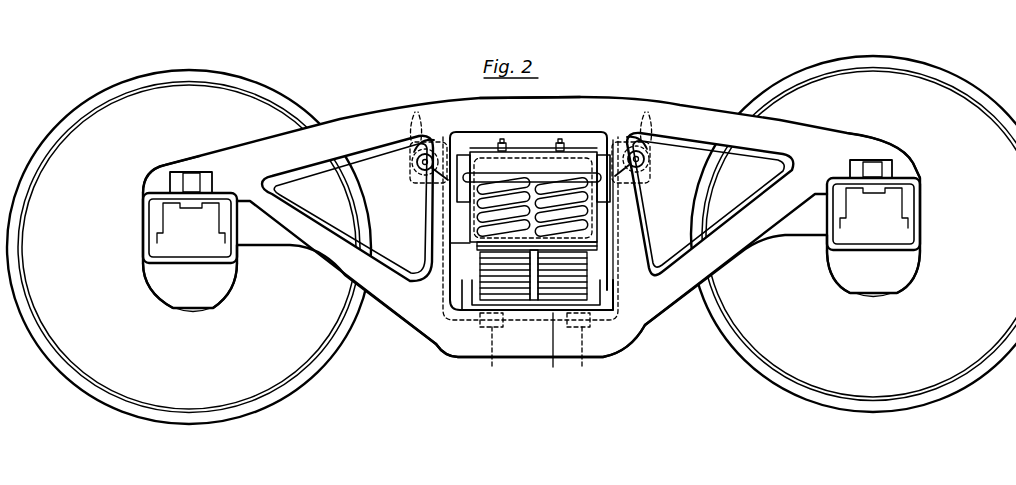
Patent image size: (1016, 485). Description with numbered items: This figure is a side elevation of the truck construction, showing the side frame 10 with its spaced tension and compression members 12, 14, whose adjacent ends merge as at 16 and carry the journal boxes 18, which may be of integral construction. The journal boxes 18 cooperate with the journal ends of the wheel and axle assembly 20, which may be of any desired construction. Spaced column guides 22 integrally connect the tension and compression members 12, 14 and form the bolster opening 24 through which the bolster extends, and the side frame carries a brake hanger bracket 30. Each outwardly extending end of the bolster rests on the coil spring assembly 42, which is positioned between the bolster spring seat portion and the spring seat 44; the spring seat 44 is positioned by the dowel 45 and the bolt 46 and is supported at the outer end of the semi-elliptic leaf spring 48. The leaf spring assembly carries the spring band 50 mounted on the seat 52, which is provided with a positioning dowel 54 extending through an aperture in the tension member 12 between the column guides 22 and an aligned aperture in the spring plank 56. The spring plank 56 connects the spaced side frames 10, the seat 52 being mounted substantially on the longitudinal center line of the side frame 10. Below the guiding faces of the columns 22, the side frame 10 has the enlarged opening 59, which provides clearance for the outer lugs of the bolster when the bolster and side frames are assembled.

The side frame 10 is at (617, 105).
The tension member 12 is at (638, 330).
The compression member 14 is at (553, 110).
The merging ends 16 is at (188, 157).
The journal box 18 is at (150, 246).
The wheel and axle assembly 20 is at (53, 168).
The column guide 22 is at (623, 225).
The bolster opening 24 is at (480, 133).
The brake hanger bracket 30 is at (440, 180).
The coil spring assembly 42 is at (543, 183).
The spring seat 44 is at (597, 246).
The dowel 45 is at (470, 281).
The bolt 46 is at (502, 143).
The semi-elliptic leaf spring 48 is at (490, 291).
The spring band 50 is at (473, 292).
The seat 52 is at (522, 310).
The positioning dowel 54 is at (544, 348).
The spring plank 56 is at (547, 349).
The enlarged opening 59 is at (462, 250).